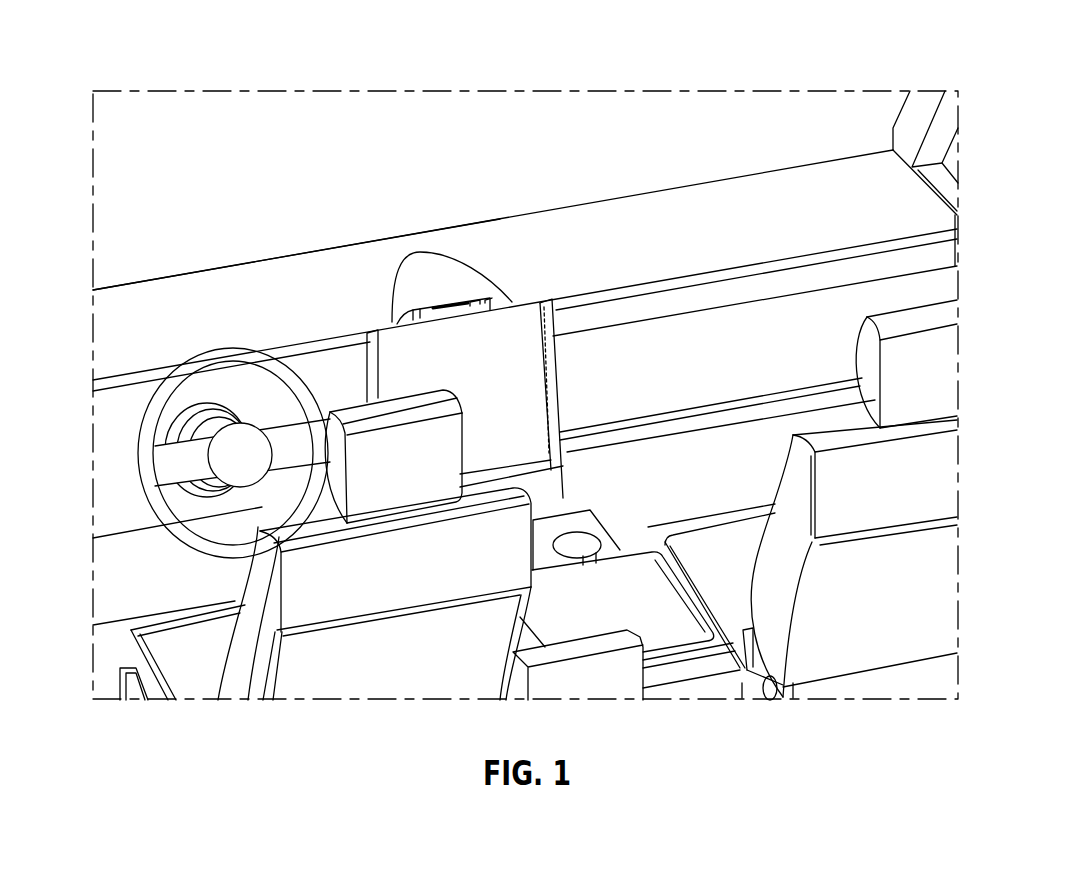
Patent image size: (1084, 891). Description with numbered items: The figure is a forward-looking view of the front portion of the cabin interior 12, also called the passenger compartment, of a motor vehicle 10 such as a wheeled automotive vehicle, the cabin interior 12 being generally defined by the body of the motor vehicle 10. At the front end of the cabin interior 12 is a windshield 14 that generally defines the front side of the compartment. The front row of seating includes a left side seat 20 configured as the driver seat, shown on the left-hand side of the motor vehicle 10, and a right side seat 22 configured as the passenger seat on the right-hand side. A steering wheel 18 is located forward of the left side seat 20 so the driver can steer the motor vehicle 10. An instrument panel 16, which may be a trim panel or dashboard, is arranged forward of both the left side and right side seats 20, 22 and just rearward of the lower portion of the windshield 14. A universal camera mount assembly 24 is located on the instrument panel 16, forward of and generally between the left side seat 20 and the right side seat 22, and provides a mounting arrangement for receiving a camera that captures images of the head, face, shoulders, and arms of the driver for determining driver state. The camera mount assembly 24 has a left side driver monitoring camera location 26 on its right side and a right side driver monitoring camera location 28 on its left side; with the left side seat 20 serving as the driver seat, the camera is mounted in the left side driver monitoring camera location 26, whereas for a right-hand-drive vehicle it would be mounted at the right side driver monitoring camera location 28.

The motor vehicle 10 is at (847, 90).
The cabin interior 12 is at (252, 138).
The windshield 14 is at (323, 138).
The instrument panel 16 is at (695, 210).
The steering wheel 18 is at (153, 413).
The left side seat 20 is at (333, 593).
The right side seat 22 is at (880, 593).
The universal camera mount assembly 24 is at (460, 302).
The left side driver monitoring camera location 26 is at (485, 296).
The right side driver monitoring camera location 28 is at (418, 303).